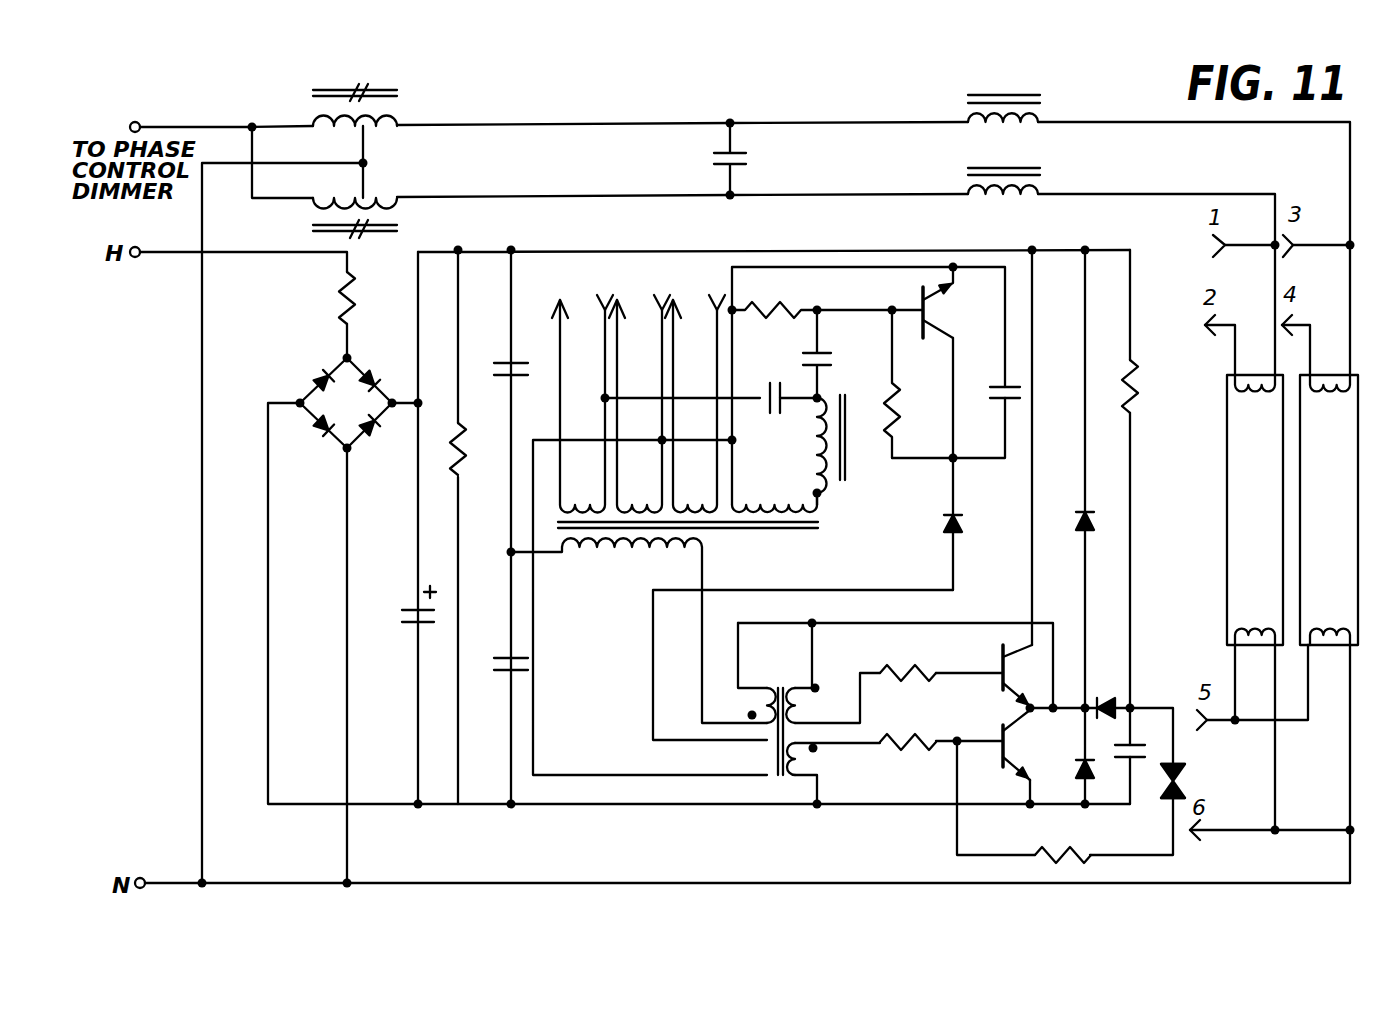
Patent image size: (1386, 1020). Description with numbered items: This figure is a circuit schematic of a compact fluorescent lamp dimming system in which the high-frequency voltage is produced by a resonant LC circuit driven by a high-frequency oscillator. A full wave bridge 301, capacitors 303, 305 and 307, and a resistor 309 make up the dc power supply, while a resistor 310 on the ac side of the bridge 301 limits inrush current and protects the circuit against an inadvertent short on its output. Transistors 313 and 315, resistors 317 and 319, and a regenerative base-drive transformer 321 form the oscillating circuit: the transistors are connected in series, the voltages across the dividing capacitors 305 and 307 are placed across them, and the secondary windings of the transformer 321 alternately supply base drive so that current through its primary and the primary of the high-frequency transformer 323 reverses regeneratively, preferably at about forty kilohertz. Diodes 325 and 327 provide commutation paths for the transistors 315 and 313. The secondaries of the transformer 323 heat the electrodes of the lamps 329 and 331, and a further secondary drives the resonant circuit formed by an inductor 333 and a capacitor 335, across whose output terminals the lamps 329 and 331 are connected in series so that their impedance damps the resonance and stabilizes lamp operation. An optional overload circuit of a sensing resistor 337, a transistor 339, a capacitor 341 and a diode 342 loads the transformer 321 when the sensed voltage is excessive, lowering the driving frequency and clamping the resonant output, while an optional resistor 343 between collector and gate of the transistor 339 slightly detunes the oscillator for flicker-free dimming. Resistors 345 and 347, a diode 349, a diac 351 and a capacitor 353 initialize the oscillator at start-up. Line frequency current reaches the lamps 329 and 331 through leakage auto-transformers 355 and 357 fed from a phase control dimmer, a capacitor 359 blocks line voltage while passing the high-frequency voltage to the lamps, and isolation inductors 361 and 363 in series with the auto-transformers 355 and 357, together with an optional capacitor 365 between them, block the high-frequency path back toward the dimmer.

The full wave bridge 301 is at (316, 376).
The capacitor 303 is at (405, 617).
The capacitor 305 is at (513, 356).
The capacitor 307 is at (520, 673).
The resistor 309 is at (445, 460).
The resistor 310 is at (342, 302).
The transistor 313 is at (1000, 662).
The transistor 315 is at (1000, 725).
The resistor 317 is at (898, 667).
The resistor 319 is at (902, 742).
The regenerative base-drive transformer 321 is at (780, 688).
The high-frequency transformer 323 is at (739, 528).
The diode 325 is at (1094, 523).
The diode 327 is at (1080, 770).
The lamp 329 is at (1225, 489).
The lamp 331 is at (1300, 572).
The inductor 333 is at (848, 473).
The capacitor 335 is at (855, 348).
The sensing resistor 337 is at (767, 301).
The transistor 339 is at (922, 290).
The capacitor 341 is at (1009, 405).
The diode 342 is at (963, 525).
The resistor 343 is at (903, 413).
The resistor 345 is at (1135, 386).
The resistor 347 is at (1056, 847).
The diode 349 is at (1107, 700).
The diac 351 is at (1183, 771).
The capacitor 353 is at (1138, 763).
The leakage auto transformer 355 is at (398, 197).
The leakage auto transformer 357 is at (398, 117).
The capacitor 359 is at (768, 383).
The isolation inductor 361 is at (1040, 194).
The isolation inductor 363 is at (1040, 120).
The capacitor 365 is at (747, 153).